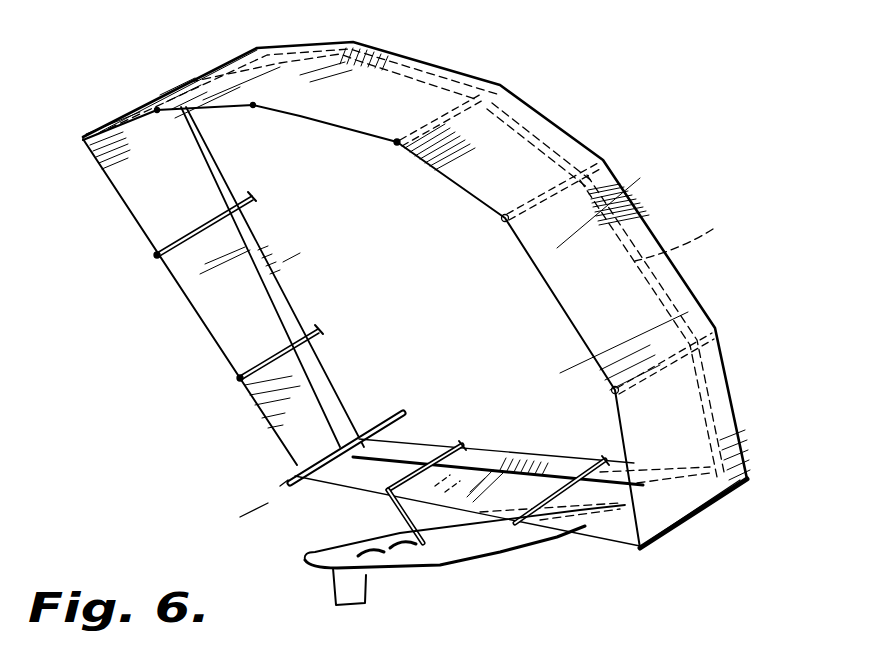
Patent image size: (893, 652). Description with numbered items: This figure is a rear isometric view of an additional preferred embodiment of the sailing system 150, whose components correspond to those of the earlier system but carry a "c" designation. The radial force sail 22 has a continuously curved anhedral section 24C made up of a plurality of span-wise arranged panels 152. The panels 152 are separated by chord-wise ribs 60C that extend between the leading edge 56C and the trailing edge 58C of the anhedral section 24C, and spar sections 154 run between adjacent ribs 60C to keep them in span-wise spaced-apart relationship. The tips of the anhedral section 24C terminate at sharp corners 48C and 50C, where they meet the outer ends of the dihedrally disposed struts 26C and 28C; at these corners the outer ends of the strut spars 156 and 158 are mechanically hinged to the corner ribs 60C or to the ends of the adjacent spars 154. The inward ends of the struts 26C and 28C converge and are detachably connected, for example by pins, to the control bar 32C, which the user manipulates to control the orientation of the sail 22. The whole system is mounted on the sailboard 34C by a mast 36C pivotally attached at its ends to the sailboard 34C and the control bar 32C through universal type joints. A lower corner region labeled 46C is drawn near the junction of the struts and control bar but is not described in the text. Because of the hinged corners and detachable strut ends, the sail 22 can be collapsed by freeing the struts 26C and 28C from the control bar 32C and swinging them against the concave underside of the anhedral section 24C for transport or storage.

The radial force sail 22 is at (661, 166).
The anhedral section 24C is at (415, 46).
The strut 26C is at (192, 323).
The strut 28C is at (589, 543).
The control bar 32C is at (383, 415).
The sailboard 34C is at (433, 567).
The mast 36C is at (388, 505).
The lower corner 46C is at (262, 498).
The sharp corner 48C is at (115, 100).
The sharp corner 50C is at (710, 513).
The leading edge 56C is at (533, 107).
The trailing edge 58C is at (474, 200).
The chord-wise rib 60C is at (597, 147).
The sailing system 150 is at (72, 262).
The panel 152 is at (377, 101).
The spar section 154 is at (287, 48).
The strut spar 156 is at (270, 250).
The strut spar 158 is at (503, 447).